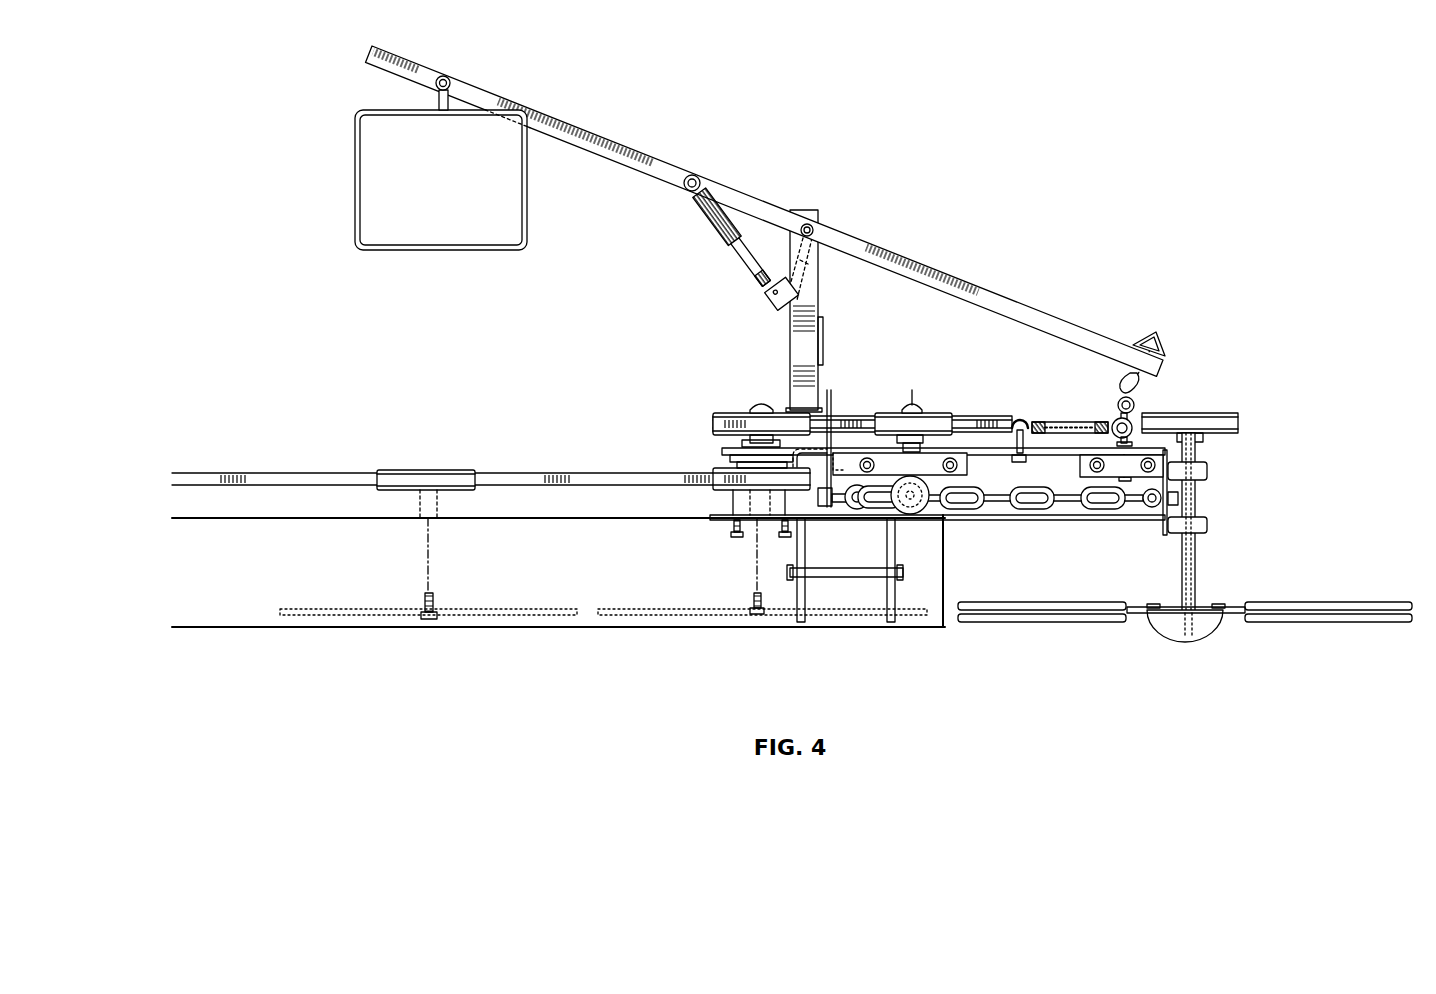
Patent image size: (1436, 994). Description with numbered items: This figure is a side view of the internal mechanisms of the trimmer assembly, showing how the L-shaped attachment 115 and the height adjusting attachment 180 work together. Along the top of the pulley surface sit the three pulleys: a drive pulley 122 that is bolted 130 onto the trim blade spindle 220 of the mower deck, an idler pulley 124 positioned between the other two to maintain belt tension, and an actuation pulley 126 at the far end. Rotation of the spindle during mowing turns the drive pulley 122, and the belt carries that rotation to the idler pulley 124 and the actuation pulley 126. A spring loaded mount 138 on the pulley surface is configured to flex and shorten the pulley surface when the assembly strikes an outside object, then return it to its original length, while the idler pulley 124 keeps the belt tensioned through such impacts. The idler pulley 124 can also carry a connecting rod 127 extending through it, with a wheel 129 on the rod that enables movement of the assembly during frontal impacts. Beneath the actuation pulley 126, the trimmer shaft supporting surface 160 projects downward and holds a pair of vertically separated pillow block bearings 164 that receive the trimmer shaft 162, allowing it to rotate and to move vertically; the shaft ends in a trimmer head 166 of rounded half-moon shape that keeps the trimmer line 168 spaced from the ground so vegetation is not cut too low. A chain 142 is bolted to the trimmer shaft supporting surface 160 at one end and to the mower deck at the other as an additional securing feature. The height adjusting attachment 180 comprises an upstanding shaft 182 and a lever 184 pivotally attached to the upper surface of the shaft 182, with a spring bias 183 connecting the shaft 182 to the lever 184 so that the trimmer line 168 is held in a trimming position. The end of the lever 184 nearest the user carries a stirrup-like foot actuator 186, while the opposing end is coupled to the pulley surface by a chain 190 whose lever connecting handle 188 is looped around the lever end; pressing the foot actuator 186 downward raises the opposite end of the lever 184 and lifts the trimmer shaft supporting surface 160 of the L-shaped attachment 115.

The L-shaped attachment 115 is at (990, 355).
The drive pulley 122 is at (722, 412).
The idler pulley 124 is at (933, 410).
The actuation pulley 126 is at (1225, 413).
The connecting rod 127 is at (929, 478).
The wheel 129 is at (933, 525).
The bolt 130 is at (760, 405).
The spring loaded mount 138 is at (1045, 413).
The chain 142 is at (1035, 503).
The trimmer shaft supporting surface 160 is at (1160, 512).
The trimmer shaft 162 is at (1198, 563).
The pillow block bearings 164 is at (1210, 518).
The trimmer head 166 is at (1150, 630).
The trimmer line 168 is at (1328, 620).
The height adjusting attachment 180 is at (843, 190).
The upstanding shaft 182 is at (788, 338).
The spring bias 183 is at (718, 232).
The lever 184 is at (640, 152).
The foot actuator 186 is at (352, 186).
The lever connecting handle 188 is at (1165, 343).
The chain 190 is at (1140, 392).
The trim blade spindle 220 is at (722, 467).